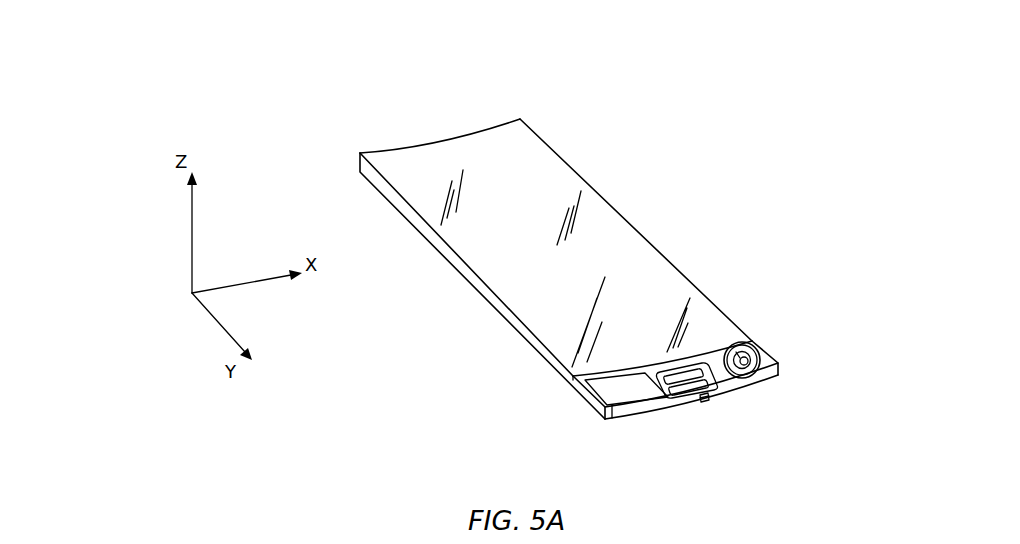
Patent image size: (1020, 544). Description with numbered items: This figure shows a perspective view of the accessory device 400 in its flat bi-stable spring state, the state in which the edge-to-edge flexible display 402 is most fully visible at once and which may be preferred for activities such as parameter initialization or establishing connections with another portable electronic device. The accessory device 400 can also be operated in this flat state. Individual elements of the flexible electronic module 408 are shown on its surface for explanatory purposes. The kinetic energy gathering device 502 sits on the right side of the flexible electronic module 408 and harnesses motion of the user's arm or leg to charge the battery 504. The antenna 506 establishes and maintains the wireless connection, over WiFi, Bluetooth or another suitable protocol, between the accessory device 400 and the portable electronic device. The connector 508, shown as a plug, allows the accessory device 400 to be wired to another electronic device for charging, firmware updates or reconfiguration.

The accessory device 400 is at (192, 93).
The flexible display 402 is at (642, 232).
The flexible electronic module 408 is at (757, 343).
The kinetic energy gathering device 502 is at (780, 365).
The battery 504 is at (627, 405).
The antenna 506 is at (720, 386).
The connector 508 is at (706, 400).